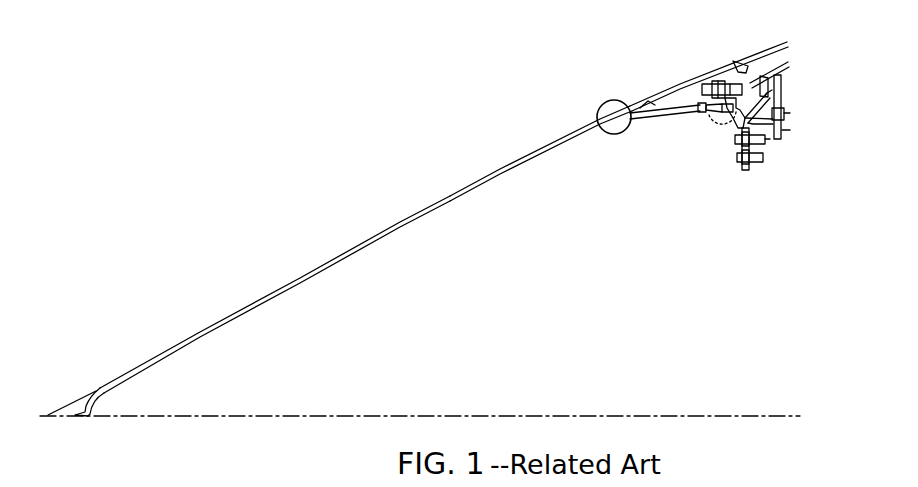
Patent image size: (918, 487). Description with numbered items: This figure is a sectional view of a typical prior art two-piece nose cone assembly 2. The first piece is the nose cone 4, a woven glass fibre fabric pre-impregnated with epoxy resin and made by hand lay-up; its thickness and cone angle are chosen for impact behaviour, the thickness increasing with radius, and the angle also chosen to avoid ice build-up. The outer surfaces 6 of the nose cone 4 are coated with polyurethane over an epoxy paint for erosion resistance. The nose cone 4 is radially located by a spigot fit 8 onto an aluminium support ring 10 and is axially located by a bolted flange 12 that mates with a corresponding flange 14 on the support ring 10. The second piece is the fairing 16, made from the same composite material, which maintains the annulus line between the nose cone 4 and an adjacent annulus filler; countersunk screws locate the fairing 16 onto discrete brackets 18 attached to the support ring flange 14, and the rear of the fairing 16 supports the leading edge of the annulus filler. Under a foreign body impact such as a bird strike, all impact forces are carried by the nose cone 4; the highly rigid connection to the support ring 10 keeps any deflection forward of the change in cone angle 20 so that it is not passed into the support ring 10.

The nose cone assembly 2 is at (398, 106).
The nose cone 4 is at (352, 248).
The outer surfaces 6 is at (490, 175).
The spigot fit 8 is at (707, 117).
The support ring 10 is at (737, 127).
The bolted flange 12 is at (718, 83).
The flange 14 is at (789, 64).
The fairing 16 is at (748, 68).
The brackets 18 is at (770, 70).
The change in cone angle 20 is at (609, 101).